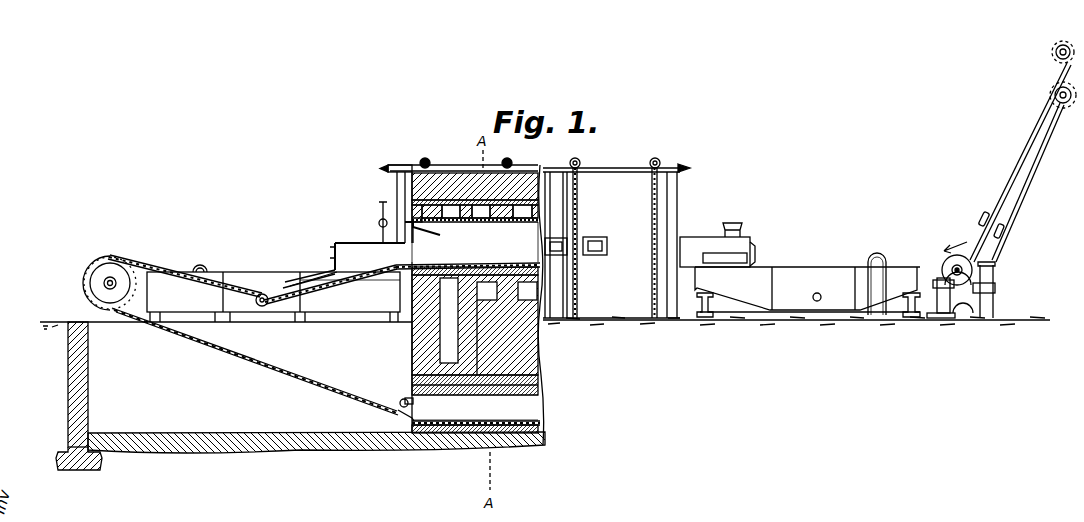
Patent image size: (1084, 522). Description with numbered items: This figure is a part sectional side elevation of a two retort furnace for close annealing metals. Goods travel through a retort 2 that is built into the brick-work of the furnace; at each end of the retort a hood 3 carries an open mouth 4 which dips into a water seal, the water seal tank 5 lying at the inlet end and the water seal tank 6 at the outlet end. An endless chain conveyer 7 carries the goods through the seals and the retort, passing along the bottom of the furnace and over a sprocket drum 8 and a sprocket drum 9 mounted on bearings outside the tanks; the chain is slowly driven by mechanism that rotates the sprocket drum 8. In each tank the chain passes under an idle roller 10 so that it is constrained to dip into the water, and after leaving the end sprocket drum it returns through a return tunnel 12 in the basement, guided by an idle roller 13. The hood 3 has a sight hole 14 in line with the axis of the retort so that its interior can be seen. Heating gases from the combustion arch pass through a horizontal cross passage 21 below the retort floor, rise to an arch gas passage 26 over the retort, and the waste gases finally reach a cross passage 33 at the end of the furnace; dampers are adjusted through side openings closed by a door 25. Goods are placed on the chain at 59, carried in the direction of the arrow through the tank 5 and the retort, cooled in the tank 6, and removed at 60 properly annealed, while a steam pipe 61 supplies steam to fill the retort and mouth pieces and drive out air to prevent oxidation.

The retort 2 is at (475, 242).
The hood 3 is at (516, 255).
The open mouth 4 is at (350, 290).
The water seal tank 5 is at (807, 285).
The water seal tank 6 is at (273, 297).
The endless chain conveyer 7 is at (218, 294).
The sprocket drum 8 is at (995, 289).
The sprocket drum 9 is at (110, 283).
The idle roller 10 is at (271, 294).
The return tunnel 12 is at (475, 407).
The idle roller 13 is at (402, 401).
The sight hole 14 is at (331, 253).
The horizontal cross passage 21 is at (507, 291).
The door 25 is at (557, 240).
The arch gas passage 26 is at (450, 218).
The cross passage 33 is at (449, 320).
The inlet loading point 59 is at (944, 263).
The outlet removal point 60 is at (184, 262).
The steam pipe 61 is at (380, 220).